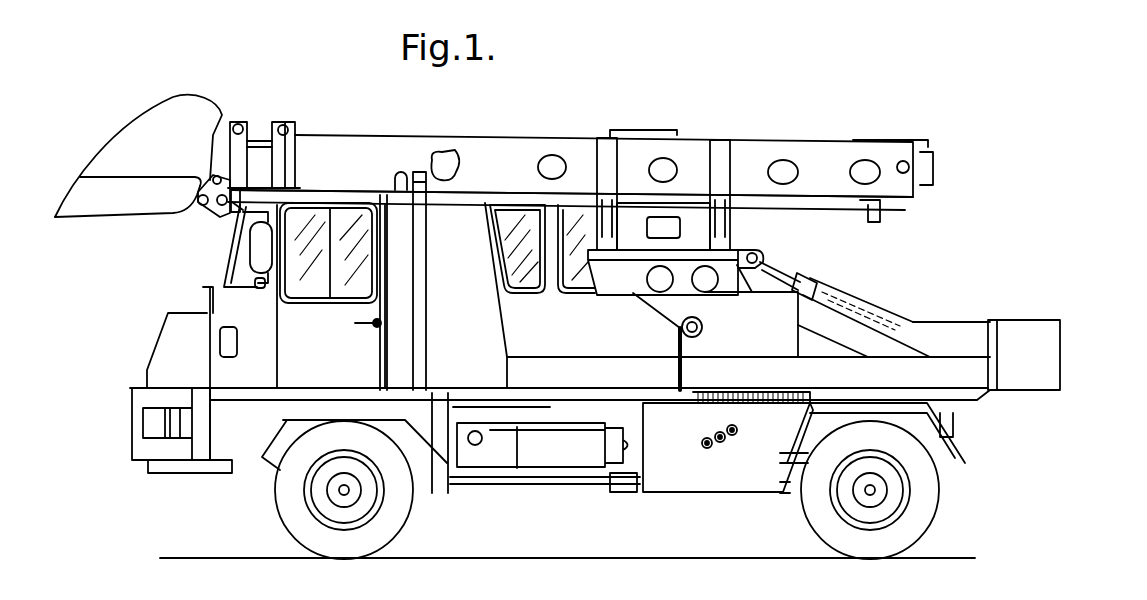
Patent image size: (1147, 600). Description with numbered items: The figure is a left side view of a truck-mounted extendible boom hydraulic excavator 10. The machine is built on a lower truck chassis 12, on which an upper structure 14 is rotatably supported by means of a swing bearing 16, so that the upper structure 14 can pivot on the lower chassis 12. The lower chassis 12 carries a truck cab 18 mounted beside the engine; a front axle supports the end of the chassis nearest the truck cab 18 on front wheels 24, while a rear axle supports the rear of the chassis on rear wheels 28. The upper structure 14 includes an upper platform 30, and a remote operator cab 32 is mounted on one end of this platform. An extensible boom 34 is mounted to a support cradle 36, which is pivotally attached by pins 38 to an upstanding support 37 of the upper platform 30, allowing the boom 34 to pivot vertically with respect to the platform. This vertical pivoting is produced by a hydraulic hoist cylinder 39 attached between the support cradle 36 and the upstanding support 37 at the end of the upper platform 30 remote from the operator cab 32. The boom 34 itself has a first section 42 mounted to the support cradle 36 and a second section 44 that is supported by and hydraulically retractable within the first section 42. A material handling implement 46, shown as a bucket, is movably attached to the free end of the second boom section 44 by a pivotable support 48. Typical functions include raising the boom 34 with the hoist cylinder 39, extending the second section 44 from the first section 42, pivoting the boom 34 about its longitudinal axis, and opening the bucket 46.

The excavator 10 is at (140, 340).
The lower truck chassis 12 is at (128, 423).
The upper structure 14 is at (1062, 357).
The swing bearing 16 is at (735, 398).
The truck cab 18 is at (237, 297).
The front wheels 24 is at (396, 530).
The rear wheels 28 is at (820, 525).
The upper platform 30 is at (920, 310).
The remote operator cab 32 is at (520, 333).
The extensible boom 34 is at (760, 130).
The support cradle 36 is at (633, 272).
The upstanding support 37 is at (690, 348).
The pins 38 is at (680, 327).
The hydraulic hoist cylinder 39 is at (833, 297).
The first boom section 42 is at (462, 148).
The second boom section 44 is at (257, 147).
The material handling implement 46 is at (117, 143).
The pivotable support 48 is at (213, 212).